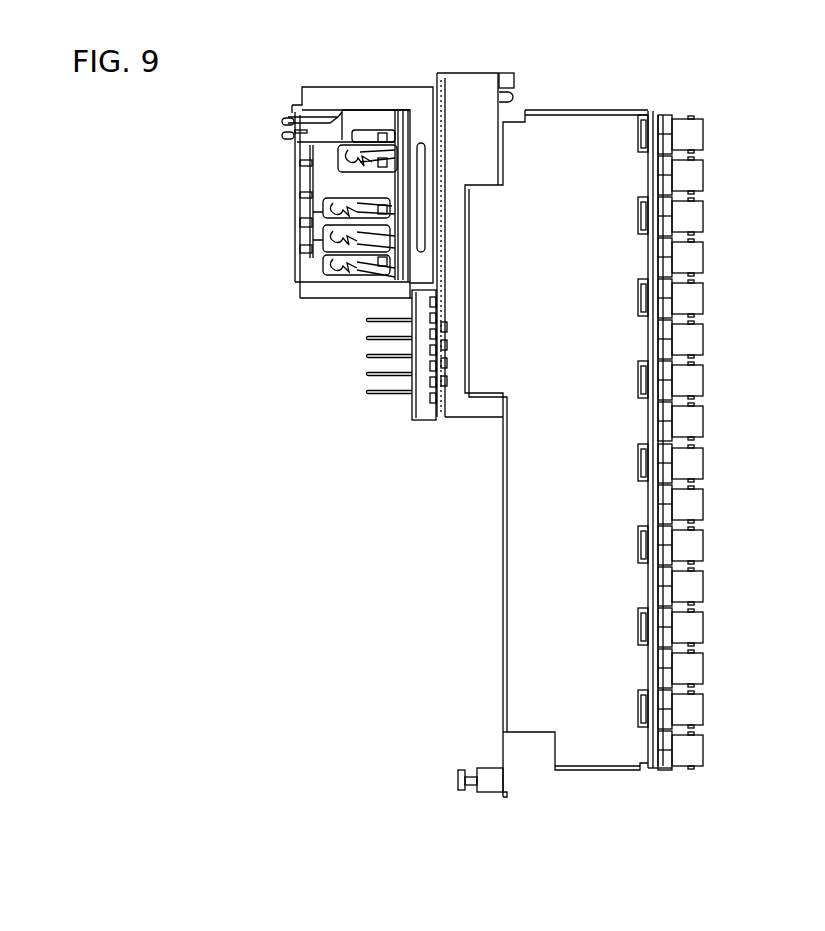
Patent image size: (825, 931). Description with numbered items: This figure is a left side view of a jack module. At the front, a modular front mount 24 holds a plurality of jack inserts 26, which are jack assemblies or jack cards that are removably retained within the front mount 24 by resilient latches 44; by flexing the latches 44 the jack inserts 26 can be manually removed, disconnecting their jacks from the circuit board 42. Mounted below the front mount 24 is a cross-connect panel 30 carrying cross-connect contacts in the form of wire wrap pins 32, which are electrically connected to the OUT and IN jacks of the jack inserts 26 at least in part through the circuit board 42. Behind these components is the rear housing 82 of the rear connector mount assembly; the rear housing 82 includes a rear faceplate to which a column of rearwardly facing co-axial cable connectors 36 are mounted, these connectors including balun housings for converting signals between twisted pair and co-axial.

The front mount 24 is at (380, 92).
The jack inserts 26 is at (298, 269).
The cross-connect panel 30 is at (421, 412).
The wire wrap pins 32 is at (376, 393).
The co-axial cable connectors 36 is at (690, 111).
The circuit board 42 is at (441, 74).
The resilient latches 44 is at (296, 107).
The rear housing 82 is at (598, 780).